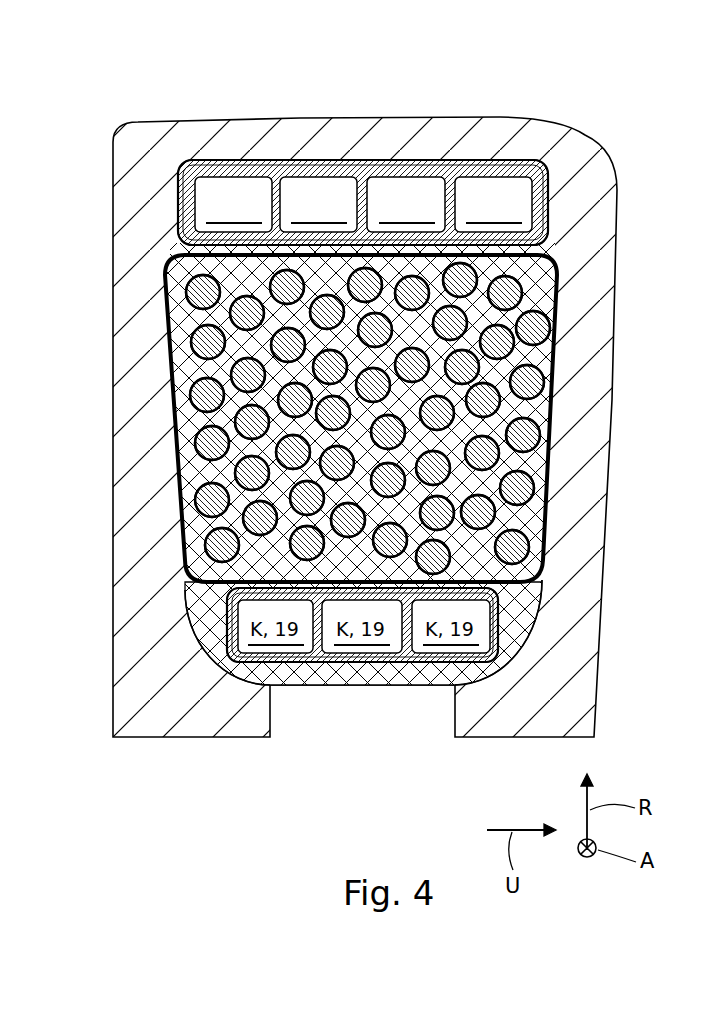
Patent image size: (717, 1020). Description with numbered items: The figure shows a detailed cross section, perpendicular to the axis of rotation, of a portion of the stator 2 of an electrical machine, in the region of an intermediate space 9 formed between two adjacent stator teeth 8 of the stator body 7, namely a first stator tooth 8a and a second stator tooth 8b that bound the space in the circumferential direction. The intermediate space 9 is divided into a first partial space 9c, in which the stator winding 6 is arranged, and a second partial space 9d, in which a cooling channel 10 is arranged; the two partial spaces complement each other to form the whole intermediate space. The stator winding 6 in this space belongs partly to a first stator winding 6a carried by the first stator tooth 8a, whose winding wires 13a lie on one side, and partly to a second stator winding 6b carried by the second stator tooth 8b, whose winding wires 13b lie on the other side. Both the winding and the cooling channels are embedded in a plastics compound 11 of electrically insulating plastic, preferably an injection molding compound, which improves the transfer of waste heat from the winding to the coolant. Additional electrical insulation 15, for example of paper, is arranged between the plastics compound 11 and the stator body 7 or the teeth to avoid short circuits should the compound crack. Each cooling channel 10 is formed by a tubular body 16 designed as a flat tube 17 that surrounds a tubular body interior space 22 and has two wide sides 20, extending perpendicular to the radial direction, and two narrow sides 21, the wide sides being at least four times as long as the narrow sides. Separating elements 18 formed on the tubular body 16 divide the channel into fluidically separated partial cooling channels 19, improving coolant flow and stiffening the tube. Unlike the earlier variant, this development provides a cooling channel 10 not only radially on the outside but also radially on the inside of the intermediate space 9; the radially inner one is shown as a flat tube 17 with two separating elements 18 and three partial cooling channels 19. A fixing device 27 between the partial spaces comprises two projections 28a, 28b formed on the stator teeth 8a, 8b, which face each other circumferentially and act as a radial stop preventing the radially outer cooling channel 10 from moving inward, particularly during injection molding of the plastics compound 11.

The stator 2 is at (648, 126).
The stator body 7 is at (365, 393).
The stator teeth 8 is at (365, 427).
The first stator tooth 8a is at (365, 427).
The second stator tooth 8b is at (150, 520).
The intermediate space 9 is at (370, 418).
The first partial space 9c is at (370, 417).
The second partial space 9d is at (358, 418).
The cooling channel 10 is at (401, 425).
The tubular body 16 is at (401, 425).
The flat tube 17 is at (497, 158).
The plastics compound 11 is at (532, 163).
The winding wires 13a is at (370, 417).
The winding wires 13b is at (370, 417).
The stator winding 6 is at (370, 417).
The first stator winding 6a is at (370, 417).
The second stator winding 6b is at (370, 417).
The fixing device 27 is at (370, 417).
The projection 28a is at (370, 417).
The projection 28b is at (370, 417).
The electrical insulation 15 is at (557, 465).
The separating elements 18 is at (358, 431).
The partial cooling channels 19 is at (358, 417).
The wide sides 20 is at (358, 417).
The narrow sides 21 is at (185, 203).
The tubular body interior space 22 is at (400, 176).